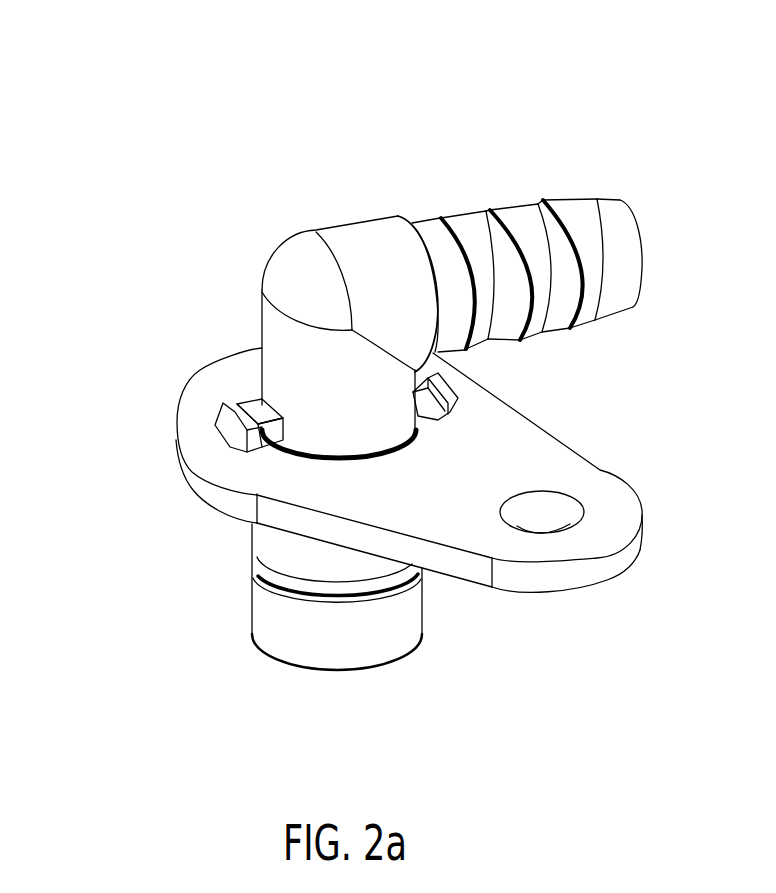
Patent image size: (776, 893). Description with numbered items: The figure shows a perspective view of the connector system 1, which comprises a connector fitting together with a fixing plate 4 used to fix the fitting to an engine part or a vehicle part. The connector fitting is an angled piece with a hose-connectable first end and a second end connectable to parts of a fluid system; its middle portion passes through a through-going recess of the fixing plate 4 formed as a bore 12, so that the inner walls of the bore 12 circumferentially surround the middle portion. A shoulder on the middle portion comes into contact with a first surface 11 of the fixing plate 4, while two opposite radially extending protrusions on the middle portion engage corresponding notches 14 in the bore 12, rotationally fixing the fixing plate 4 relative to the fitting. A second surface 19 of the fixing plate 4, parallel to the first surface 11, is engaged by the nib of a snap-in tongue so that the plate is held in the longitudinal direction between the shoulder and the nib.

The connector system 1 is at (408, 401).
The fixing plate 4 is at (307, 525).
The first surface 11 is at (453, 581).
The bore 12 is at (412, 440).
The notches 14 is at (255, 452).
The second surface 19 is at (416, 503).